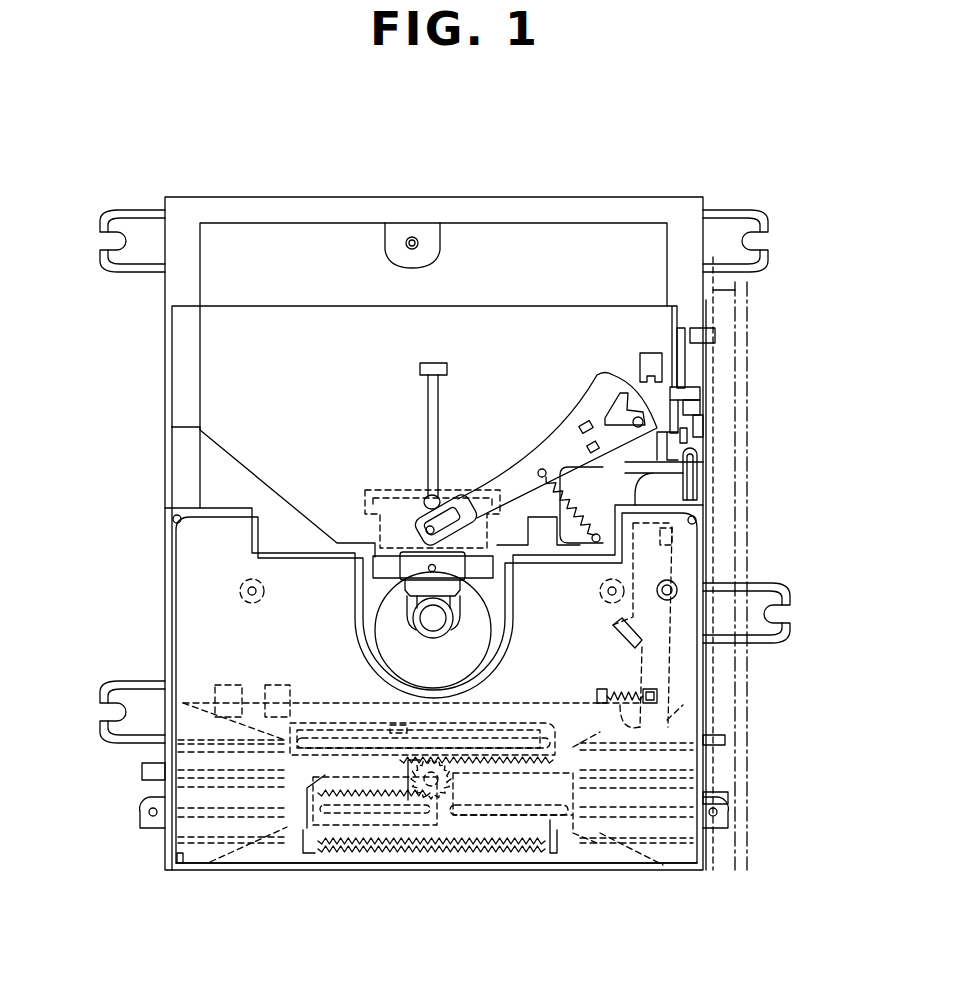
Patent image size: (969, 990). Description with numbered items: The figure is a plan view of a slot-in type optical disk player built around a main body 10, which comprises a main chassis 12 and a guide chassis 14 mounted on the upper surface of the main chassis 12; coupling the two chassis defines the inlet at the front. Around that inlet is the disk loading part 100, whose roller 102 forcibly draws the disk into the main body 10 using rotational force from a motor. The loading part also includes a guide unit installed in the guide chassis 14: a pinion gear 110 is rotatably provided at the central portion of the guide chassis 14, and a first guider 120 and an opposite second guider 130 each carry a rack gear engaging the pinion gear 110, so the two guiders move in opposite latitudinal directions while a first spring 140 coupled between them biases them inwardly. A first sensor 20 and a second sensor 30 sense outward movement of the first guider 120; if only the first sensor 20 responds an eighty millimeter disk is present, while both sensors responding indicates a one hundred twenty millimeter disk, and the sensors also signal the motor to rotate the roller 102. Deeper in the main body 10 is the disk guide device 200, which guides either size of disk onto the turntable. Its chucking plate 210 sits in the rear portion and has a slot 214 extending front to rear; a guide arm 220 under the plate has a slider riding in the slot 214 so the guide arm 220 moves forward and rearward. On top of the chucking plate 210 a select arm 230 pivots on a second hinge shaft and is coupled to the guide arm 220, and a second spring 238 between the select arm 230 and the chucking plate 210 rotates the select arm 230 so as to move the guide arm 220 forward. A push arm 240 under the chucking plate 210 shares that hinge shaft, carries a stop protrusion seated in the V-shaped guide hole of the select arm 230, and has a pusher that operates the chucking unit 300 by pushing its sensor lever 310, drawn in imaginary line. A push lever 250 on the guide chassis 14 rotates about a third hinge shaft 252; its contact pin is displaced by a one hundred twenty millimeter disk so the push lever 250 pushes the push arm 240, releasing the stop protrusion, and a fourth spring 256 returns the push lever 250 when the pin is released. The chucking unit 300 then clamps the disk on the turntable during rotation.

The main body 10 is at (76, 112).
The main chassis 12 is at (638, 212).
The guide chassis 14 is at (210, 615).
The first sensor 20 is at (277, 707).
The second sensor 30 is at (226, 705).
The disk loading part 100 is at (630, 873).
The roller 102 is at (188, 760).
The pinion gear 110 is at (437, 787).
The first guider 120 is at (367, 760).
The second guider 130 is at (505, 788).
The first spring 140 is at (470, 847).
The disk guide device 200 is at (528, 442).
The chucking plate 210 is at (188, 368).
The slot 214 is at (420, 423).
The guide arm 220 is at (403, 503).
The select arm 230 is at (502, 480).
The second spring 238 is at (550, 471).
The push arm 240 is at (690, 397).
The push lever 250 is at (657, 672).
The third hinge shaft 252 is at (675, 585).
The fourth spring 256 is at (590, 733).
The chucking unit 300 is at (752, 527).
The sensor lever 310 is at (702, 418).